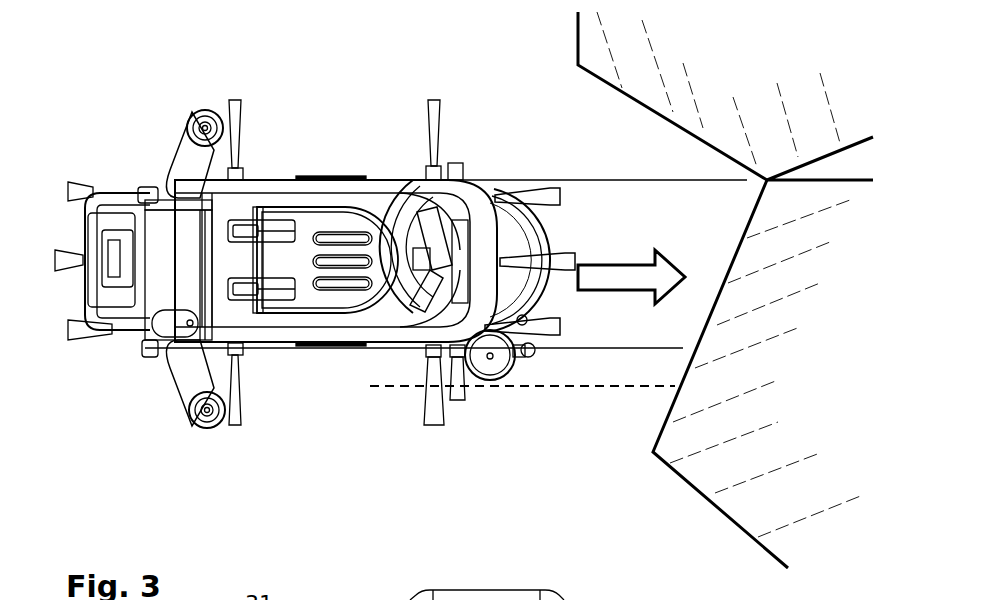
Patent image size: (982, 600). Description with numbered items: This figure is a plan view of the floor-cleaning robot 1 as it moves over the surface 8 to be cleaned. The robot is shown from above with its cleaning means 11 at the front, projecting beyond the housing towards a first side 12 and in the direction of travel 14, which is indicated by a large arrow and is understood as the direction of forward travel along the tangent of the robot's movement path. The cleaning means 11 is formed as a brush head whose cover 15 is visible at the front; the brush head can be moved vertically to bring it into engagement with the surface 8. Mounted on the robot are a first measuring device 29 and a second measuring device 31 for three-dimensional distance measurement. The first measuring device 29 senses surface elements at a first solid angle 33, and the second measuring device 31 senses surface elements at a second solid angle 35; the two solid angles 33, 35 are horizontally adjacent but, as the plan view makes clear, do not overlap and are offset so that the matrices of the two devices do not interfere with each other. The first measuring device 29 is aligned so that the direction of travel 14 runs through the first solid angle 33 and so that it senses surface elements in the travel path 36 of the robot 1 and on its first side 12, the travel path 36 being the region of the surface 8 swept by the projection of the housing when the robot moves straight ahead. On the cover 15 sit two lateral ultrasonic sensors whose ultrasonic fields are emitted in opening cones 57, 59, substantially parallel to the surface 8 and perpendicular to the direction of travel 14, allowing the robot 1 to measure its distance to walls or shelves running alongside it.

The floor-cleaning robot 1 is at (145, 394).
The surface to be cleaned 8 is at (289, 514).
The cleaning means 11 is at (525, 372).
The first side 12 is at (350, 355).
The direction of travel 14 is at (620, 278).
The cover 15 is at (525, 247).
The first measuring device 29 is at (436, 232).
The second measuring device 31 is at (432, 297).
The first solid angle 33 is at (716, 463).
The second solid angle 35 is at (628, 97).
The travel path 36 is at (707, 230).
The opening cone 57 is at (457, 395).
The opening cone 59 is at (430, 166).